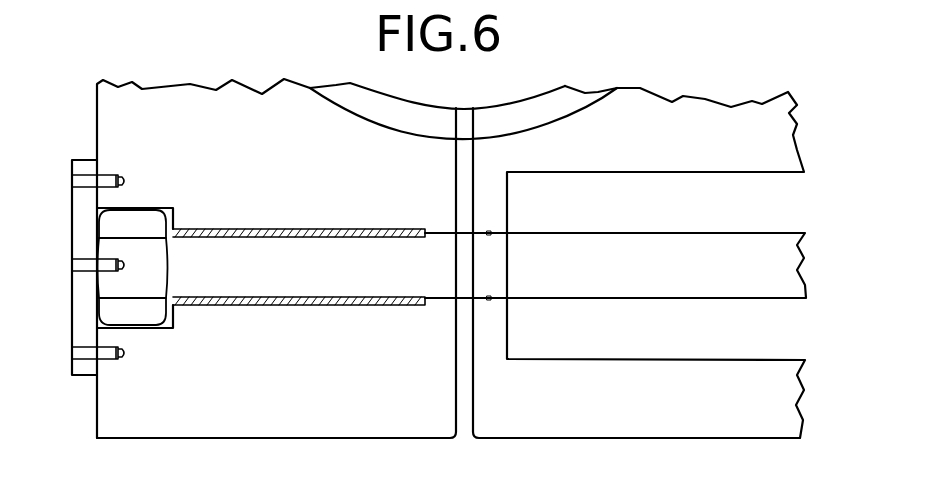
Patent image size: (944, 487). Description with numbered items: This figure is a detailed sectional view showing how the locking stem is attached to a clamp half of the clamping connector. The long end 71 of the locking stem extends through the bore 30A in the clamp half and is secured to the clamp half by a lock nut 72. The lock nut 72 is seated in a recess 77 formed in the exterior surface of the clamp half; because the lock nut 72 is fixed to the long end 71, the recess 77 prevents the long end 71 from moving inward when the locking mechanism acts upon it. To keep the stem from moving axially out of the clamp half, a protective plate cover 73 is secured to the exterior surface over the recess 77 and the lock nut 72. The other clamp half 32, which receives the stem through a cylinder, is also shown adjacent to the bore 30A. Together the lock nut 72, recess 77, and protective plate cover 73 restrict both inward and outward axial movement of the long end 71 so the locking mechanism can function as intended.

The clamp half 32 is at (289, 392).
The protective plate cover 73 is at (73, 208).
The recess 77 is at (172, 206).
The lock nut 72 is at (143, 213).
The long end 71 is at (300, 277).
The bore 30A is at (344, 300).